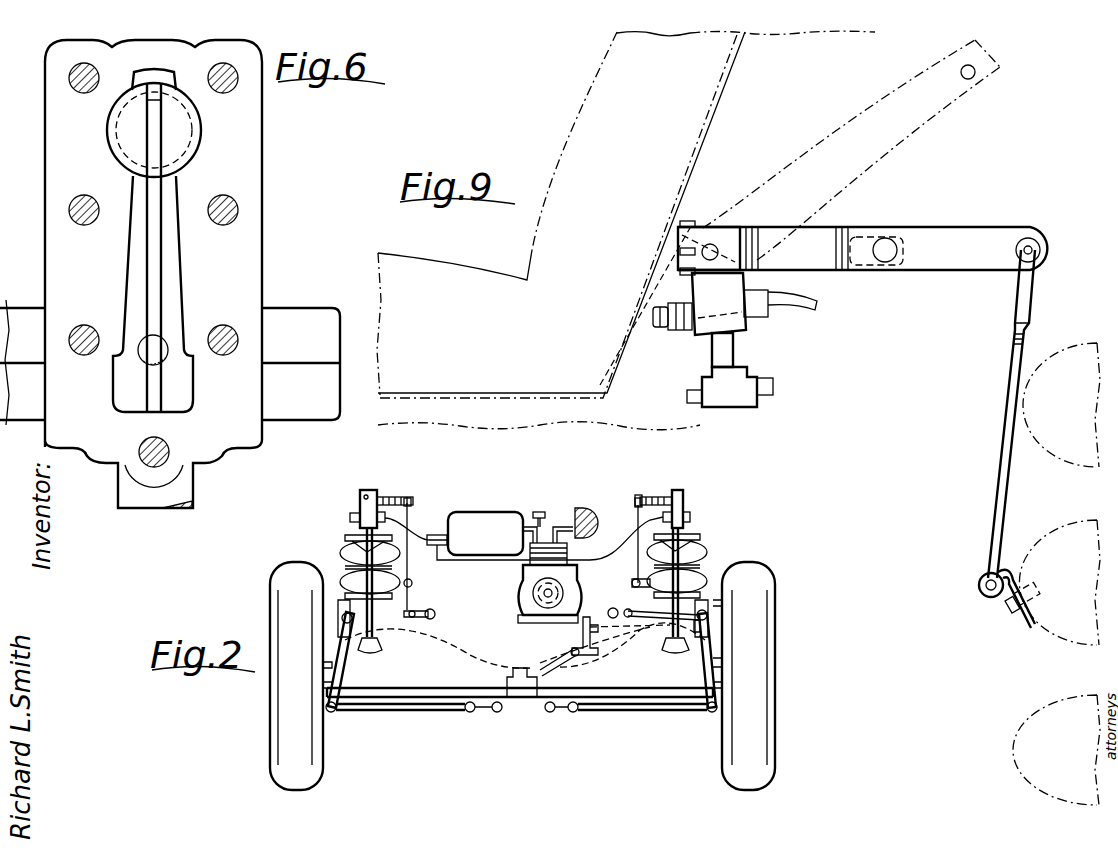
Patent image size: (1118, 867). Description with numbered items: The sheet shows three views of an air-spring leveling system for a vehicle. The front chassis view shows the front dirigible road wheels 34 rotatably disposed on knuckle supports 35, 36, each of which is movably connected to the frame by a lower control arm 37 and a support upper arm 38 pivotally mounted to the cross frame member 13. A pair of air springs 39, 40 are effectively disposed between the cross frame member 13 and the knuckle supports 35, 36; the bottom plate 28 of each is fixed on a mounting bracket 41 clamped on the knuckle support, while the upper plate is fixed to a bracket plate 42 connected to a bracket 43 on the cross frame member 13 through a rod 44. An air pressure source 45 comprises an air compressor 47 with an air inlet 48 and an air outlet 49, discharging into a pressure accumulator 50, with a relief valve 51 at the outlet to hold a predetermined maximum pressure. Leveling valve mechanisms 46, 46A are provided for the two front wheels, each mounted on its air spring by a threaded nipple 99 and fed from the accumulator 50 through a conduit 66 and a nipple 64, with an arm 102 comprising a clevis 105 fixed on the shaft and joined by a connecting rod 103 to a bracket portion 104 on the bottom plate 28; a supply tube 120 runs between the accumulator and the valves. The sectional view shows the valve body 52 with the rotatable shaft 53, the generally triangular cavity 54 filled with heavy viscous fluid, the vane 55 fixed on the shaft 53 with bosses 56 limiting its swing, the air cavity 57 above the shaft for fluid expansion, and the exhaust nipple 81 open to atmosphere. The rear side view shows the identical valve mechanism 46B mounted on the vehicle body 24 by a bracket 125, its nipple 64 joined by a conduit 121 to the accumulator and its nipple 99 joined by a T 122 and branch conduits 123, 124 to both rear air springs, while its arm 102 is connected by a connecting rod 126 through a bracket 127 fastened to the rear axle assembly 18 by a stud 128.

In FIG. 2, the cross frame member 13 is at (468, 668).
In FIG. 9, the rear axle assembly 18 is at (1060, 642).
In FIG. 9, the vehicle body 24 is at (708, 118).
In FIG. 2, the bottom plate 28 is at (722, 599).
In FIG. 2, the front dirigible road wheels 34 is at (308, 783).
In FIG. 2, the knuckle support 35 is at (340, 708).
In FIG. 2, the knuckle support 36 is at (700, 690).
In FIG. 2, the lower control arm 37 is at (411, 711).
In FIG. 2, the support upper arm 38 is at (405, 634).
In FIG. 2, the air spring 39 is at (345, 551).
In FIG. 2, the air spring 40 is at (710, 574).
In FIG. 2, the mounting bracket 41 is at (703, 616).
In FIG. 2, the bracket plate 42 is at (697, 536).
In FIG. 2, the bracket 43 is at (370, 655).
In FIG. 2, the rod 44 is at (345, 583).
In FIG. 2, the air pressure source 45 is at (558, 508).
In FIG. 2, the leveling valve mechanism 46 is at (356, 501).
In FIG. 2, the leveling valve mechanism 46A is at (688, 501).
In FIG. 9, the valve mechanism 46B is at (735, 298).
In FIG. 2, the air compressor 47 is at (523, 592).
In FIG. 2, the air inlet 48 is at (586, 515).
In FIG. 2, the air outlet 49 is at (530, 517).
In FIG. 2, the pressure accumulator 50 is at (490, 537).
In FIG. 2, the relief valve 51 is at (538, 512).
In FIG. 6, the valve body 52 is at (265, 149).
In FIG. 6, the shaft 53 is at (137, 130).
In FIG. 9, the shaft 53 is at (713, 245).
In FIG. 6, the cavity 54 is at (133, 252).
In FIG. 6, the vane 55 is at (155, 272).
In FIG. 6, the bosses 56 is at (152, 372).
In FIG. 6, the air cavity 57 is at (162, 72).
In FIG. 6, the nipple 64 is at (300, 312).
In FIG. 9, the nipple 64 is at (770, 306).
In FIG. 2, the conduit 66 is at (388, 497).
In FIG. 6, the nipple 81 is at (20, 312).
In FIG. 6, the threaded nipple 99 is at (152, 498).
In FIG. 9, the threaded nipple 99 is at (700, 339).
In FIG. 9, the arm 102 is at (977, 228).
In FIG. 2, the arm 102 is at (654, 497).
In FIG. 2, the connecting rod 103 is at (415, 565).
In FIG. 2, the bracket portion 104 is at (412, 600).
In FIG. 2, the clevis 105 is at (412, 504).
In FIG. 2, the supply tube 120 is at (590, 562).
In FIG. 9, the conduit 121 is at (822, 304).
In FIG. 9, the T 122 is at (740, 404).
In FIG. 9, the branch conduit 123 is at (688, 396).
In FIG. 9, the branch conduit 124 is at (775, 382).
In FIG. 9, the bracket 125 is at (650, 276).
In FIG. 9, the connecting rod 126 is at (1015, 357).
In FIG. 9, the bracket 127 is at (988, 582).
In FIG. 9, the stud 128 is at (1010, 606).